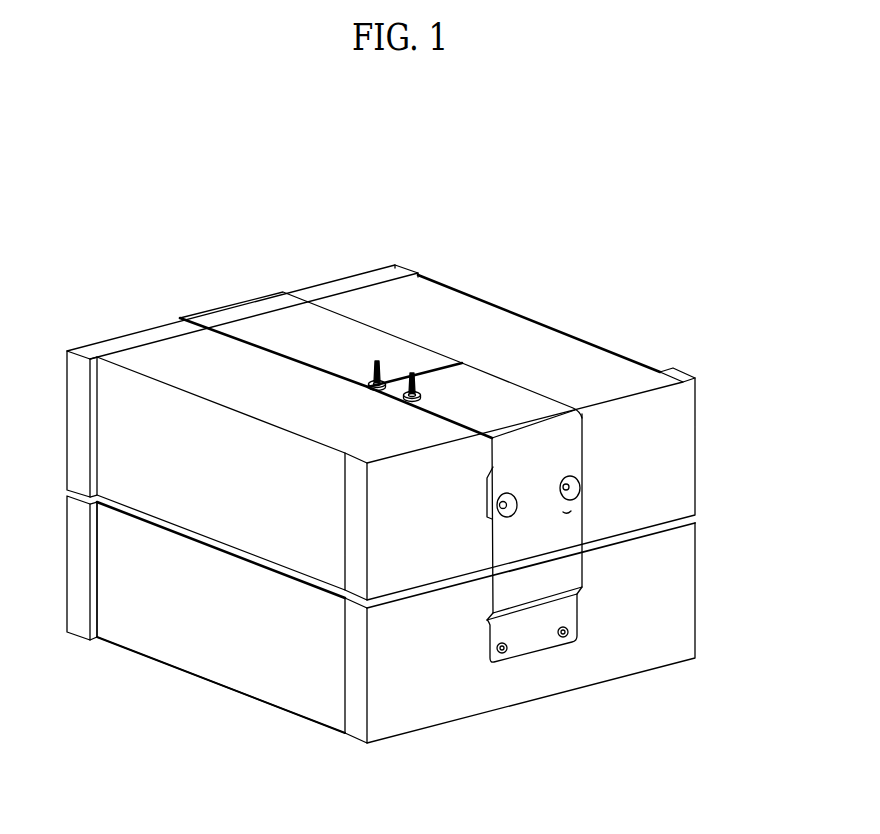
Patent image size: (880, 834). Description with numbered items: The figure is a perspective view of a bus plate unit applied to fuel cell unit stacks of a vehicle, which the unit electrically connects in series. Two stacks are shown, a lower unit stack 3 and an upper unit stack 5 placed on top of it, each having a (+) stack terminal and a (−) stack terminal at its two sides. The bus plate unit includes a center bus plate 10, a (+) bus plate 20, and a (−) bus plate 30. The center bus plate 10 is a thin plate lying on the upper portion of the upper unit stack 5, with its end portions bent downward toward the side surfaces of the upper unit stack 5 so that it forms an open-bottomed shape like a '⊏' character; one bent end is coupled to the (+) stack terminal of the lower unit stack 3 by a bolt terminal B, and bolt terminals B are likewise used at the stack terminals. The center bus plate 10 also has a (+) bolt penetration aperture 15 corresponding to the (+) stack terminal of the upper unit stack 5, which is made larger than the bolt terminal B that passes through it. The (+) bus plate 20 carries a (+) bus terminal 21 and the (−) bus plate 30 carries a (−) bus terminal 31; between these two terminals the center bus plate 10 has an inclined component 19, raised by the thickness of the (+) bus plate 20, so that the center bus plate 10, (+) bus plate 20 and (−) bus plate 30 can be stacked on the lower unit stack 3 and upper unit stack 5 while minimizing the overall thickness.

The lower unit stack 3 is at (668, 600).
The upper unit stack 5 is at (668, 420).
The center bus plate 10 is at (502, 400).
The (+) bolt penetration aperture 15 is at (567, 512).
The inclined component 19 is at (462, 365).
The (+) bus plate 20 is at (490, 494).
The (+) bus terminal 21 is at (412, 372).
The (−) bus plate 30 is at (257, 318).
The (−) bus terminal 31 is at (377, 360).
The bolt terminal B is at (573, 474).